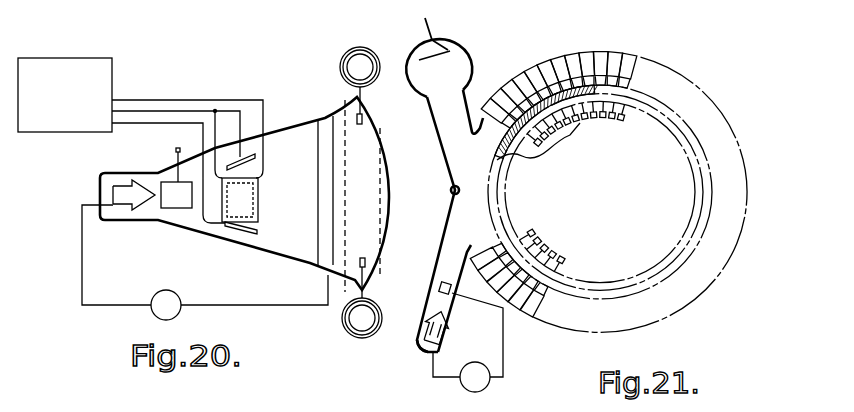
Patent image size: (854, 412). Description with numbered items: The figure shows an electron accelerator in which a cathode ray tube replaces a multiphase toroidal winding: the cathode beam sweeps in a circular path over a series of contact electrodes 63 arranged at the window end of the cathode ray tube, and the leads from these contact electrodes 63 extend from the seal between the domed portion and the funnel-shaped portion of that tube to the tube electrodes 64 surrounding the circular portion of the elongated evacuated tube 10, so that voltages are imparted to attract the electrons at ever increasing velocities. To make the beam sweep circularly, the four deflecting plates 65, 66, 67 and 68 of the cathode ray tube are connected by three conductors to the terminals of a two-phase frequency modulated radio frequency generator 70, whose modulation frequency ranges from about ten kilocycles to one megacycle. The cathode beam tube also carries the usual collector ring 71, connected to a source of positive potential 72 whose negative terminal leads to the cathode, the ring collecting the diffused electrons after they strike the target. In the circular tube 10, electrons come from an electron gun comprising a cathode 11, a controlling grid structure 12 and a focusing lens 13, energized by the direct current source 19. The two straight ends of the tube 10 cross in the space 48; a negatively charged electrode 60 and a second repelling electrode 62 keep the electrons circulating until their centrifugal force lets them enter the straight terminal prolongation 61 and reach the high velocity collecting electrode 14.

In FIG. 20, the two-phase frequency modulated radio frequency generator 70 is at (104, 72).
In FIG. 20, the collector ring 71 is at (325, 117).
In FIG. 20, the evacuated tube 10 is at (370, 54).
In FIG. 20, the deflecting plate 67 is at (257, 162).
In FIG. 20, the deflecting plate 66 is at (259, 189).
In FIG. 20, the deflecting plate 65 is at (243, 202).
In FIG. 20, the deflecting plate 68 is at (258, 233).
In FIG. 20, the contact electrodes 63 is at (366, 262).
In FIG. 21, the contact electrodes 63 is at (580, 124).
In FIG. 20, the tube electrodes 64 is at (382, 306).
In FIG. 21, the tube electrodes 64 is at (517, 84).
In FIG. 20, the source of positive potential 72 is at (176, 317).
In FIG. 21, the target or collecting electrode 14 is at (460, 42).
In FIG. 21, the straight terminal prolongation 61 is at (437, 127).
In FIG. 21, the second negatively charged repelling electrode 62 is at (474, 128).
In FIG. 21, the negatively charged electrode 60 is at (452, 189).
In FIG. 21, the crossing space 48 is at (461, 279).
In FIG. 21, the focusing lens 13 is at (451, 299).
In FIG. 21, the controlling grid structure 12 is at (450, 331).
In FIG. 21, the cathode 11 is at (418, 340).
In FIG. 21, the direct current energizing source 19 is at (480, 391).